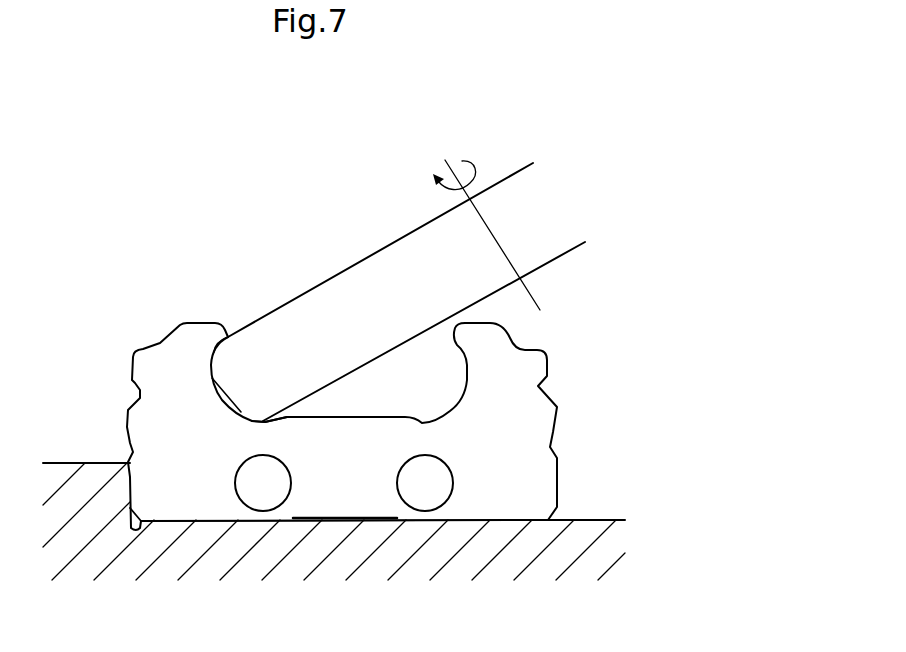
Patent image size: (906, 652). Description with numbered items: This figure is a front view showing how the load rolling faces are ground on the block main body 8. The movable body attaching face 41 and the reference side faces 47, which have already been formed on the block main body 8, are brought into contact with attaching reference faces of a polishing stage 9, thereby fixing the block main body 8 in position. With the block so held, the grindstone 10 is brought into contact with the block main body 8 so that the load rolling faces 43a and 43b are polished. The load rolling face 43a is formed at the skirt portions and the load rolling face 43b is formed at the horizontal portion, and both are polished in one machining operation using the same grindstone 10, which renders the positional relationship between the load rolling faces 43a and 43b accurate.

The block main body 8 is at (154, 332).
The polishing stage 9 is at (78, 457).
The grindstone 10 is at (332, 268).
The movable body attaching face 41 is at (237, 522).
The load rolling face 43a is at (227, 334).
The load rolling face 43b is at (263, 417).
The reference side face 47 is at (130, 500).